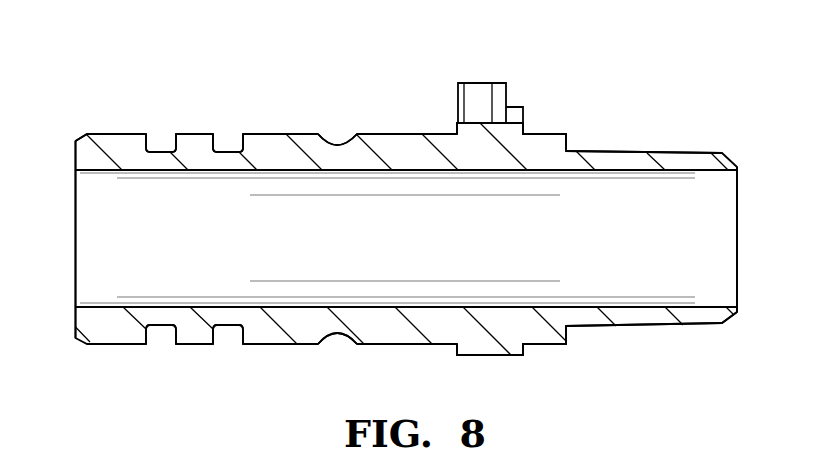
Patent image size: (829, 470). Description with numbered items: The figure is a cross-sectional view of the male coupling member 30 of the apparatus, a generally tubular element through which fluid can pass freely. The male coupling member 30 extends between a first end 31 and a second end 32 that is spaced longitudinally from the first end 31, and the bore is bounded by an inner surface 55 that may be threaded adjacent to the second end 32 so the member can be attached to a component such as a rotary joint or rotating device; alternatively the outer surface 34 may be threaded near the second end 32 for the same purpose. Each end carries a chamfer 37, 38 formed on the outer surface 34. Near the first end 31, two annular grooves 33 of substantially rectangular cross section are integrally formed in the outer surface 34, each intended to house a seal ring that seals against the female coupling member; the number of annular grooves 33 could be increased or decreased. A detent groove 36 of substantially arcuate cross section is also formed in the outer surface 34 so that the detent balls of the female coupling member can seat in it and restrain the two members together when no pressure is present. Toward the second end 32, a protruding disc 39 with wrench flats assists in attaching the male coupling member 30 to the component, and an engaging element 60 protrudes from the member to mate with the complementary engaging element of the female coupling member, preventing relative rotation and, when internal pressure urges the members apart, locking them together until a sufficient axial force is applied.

The male coupling member 30 is at (713, 80).
The first end 31 is at (76, 237).
The second end 32 is at (737, 232).
The annular groove 33 is at (232, 150).
The outer surface 34 is at (623, 152).
The detent groove 36 is at (338, 145).
The chamfer 37 is at (728, 321).
The chamfer 38 is at (76, 141).
The protruding disc 39 is at (543, 134).
The inner surface 55 is at (673, 172).
The engaging element 60 is at (477, 93).